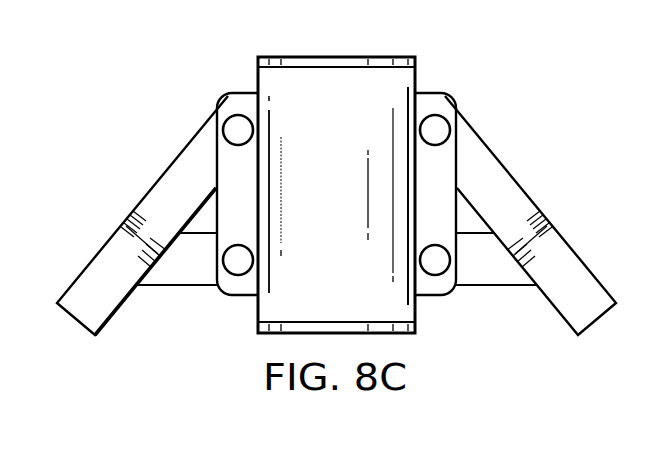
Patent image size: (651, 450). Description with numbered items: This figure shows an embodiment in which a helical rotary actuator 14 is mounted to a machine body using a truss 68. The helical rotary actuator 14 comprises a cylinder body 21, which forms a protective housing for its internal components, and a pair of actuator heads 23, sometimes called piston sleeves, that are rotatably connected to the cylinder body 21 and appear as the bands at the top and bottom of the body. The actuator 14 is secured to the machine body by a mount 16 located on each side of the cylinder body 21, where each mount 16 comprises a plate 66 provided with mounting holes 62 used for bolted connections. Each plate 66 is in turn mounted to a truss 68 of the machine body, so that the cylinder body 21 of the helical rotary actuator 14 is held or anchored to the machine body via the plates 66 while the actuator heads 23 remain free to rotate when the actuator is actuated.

The helical rotary actuator 14 is at (417, 212).
The mount 16 is at (457, 163).
The cylinder body 21 is at (305, 68).
The actuator head 23 is at (365, 56).
The mounting hole 62 is at (230, 117).
The plate 66 is at (232, 168).
The truss 68 is at (568, 218).